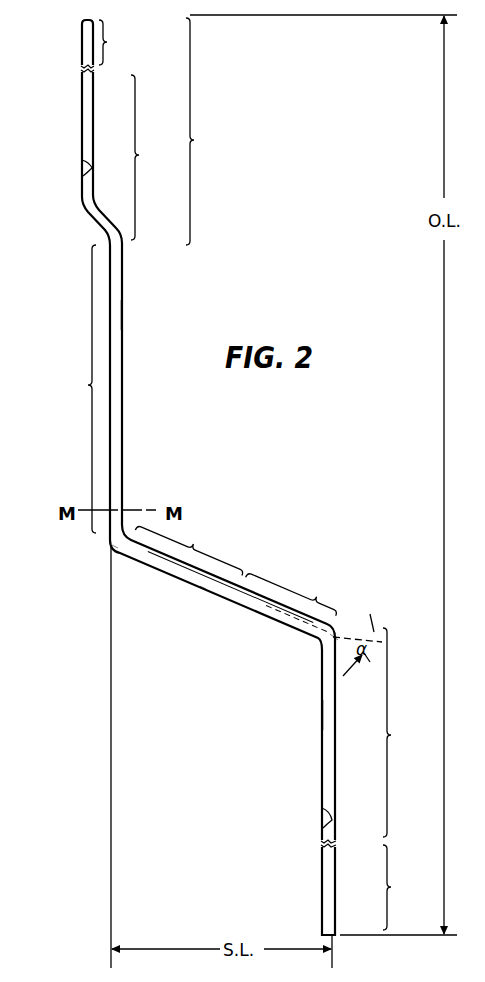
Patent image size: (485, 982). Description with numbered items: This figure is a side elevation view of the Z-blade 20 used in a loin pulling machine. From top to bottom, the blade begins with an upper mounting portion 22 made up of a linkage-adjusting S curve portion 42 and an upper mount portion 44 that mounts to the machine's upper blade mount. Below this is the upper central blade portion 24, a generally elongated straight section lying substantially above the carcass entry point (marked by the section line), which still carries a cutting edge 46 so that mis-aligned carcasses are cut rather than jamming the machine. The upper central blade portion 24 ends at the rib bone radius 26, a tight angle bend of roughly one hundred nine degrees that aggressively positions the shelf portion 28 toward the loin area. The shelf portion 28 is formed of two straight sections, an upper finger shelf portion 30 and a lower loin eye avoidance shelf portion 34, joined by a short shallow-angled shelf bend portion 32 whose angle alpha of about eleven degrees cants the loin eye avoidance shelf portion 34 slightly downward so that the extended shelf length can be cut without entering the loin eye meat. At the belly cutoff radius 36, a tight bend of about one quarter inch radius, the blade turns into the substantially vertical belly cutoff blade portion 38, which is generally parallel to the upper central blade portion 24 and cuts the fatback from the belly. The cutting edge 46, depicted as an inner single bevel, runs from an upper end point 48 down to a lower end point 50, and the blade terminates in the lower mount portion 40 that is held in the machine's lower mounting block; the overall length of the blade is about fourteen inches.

The Z-blade 20 is at (46, 142).
The upper mounting portion 22 is at (206, 131).
The upper central blade portion 24 is at (75, 389).
The rib bone radius 26 is at (107, 553).
The shelf portion 28 is at (201, 590).
The finger shelf portion 30 is at (189, 530).
The shelf bend portion 32 is at (228, 596).
The loin eye avoidance shelf portion 34 is at (308, 572).
The belly cutoff radius 36 is at (335, 634).
The belly cutoff blade portion 38 is at (402, 732).
The lower mount portion 40 is at (402, 887).
The S curve portion 42 is at (151, 157).
The upper mount portion 44 is at (119, 42).
The cutting edge 46 is at (122, 353).
The upper end point 48 is at (84, 175).
The lower end point 50 is at (325, 812).